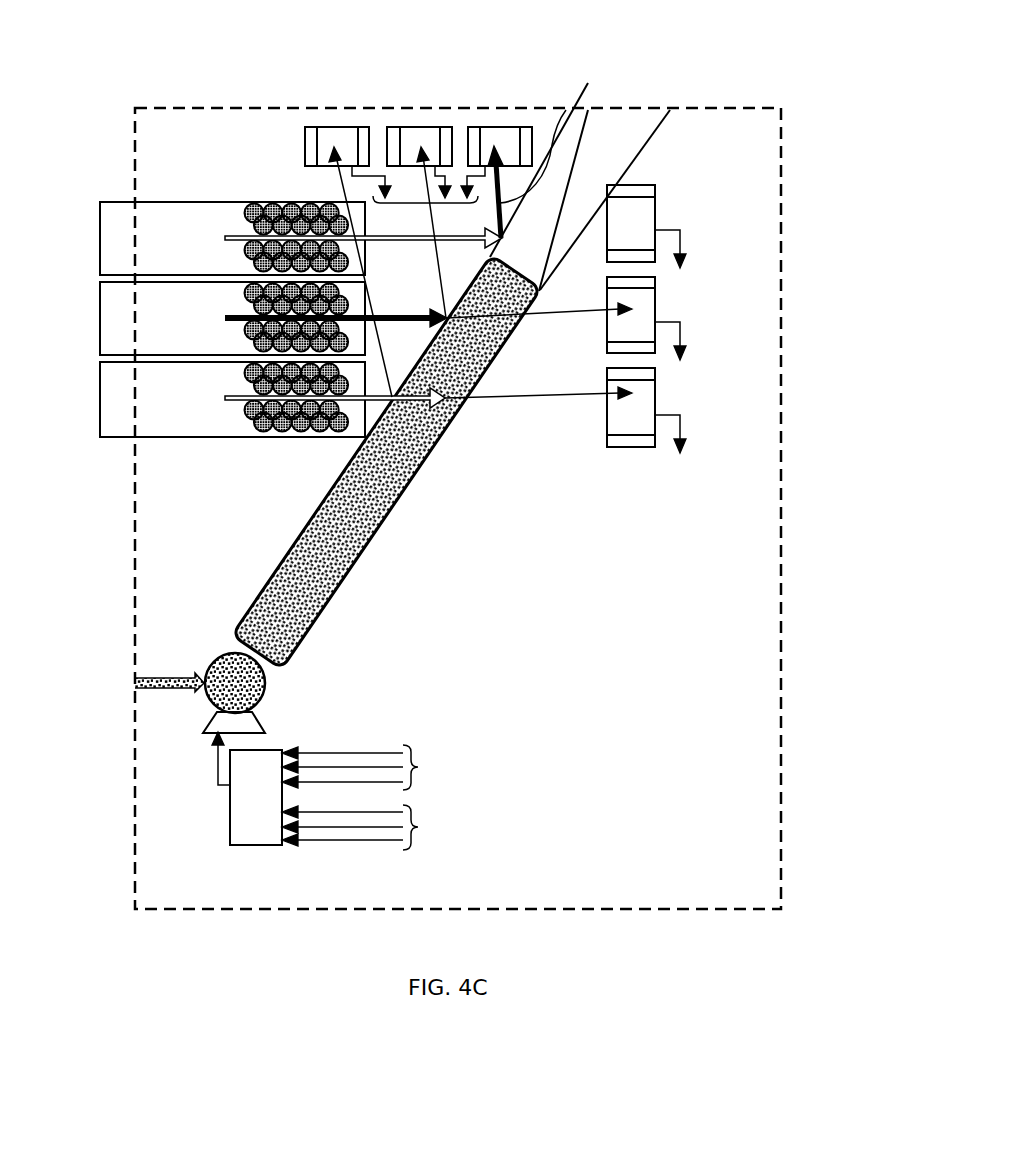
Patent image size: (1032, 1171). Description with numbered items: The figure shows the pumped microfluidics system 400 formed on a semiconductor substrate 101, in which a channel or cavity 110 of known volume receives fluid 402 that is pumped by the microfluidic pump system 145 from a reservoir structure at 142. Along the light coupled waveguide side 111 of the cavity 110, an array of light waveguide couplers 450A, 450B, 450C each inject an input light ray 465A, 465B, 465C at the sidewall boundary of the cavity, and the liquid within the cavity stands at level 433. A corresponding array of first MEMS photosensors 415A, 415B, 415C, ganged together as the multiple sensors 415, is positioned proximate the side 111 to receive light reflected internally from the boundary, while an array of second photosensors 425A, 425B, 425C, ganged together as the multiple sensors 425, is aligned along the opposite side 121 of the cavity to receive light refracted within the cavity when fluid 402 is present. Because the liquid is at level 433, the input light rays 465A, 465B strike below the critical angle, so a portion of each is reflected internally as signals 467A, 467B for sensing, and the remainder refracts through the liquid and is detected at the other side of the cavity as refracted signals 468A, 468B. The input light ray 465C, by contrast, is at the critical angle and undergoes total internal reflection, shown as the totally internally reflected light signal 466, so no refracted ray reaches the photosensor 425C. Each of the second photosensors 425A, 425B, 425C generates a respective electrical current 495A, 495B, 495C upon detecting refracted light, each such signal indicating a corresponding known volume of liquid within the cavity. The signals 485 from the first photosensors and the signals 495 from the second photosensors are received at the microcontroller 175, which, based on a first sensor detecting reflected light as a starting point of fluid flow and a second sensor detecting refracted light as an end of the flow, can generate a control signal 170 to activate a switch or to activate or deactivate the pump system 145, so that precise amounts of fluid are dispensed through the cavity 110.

The microfluidics system 400 is at (178, 108).
The semiconductor substrate 101 is at (693, 862).
The multiple photosensors 415 is at (297, 60).
The first MEMS light sensor 415A is at (338, 127).
The first MEMS light sensor 415B is at (422, 127).
The first MEMS light sensor 415C is at (503, 127).
The generated signals 485 is at (427, 207).
The totally internally reflected light signal 466 is at (580, 175).
The opposite side of the cavity 121 is at (373, 462).
The fluid 402 is at (373, 462).
The light coupled waveguide side 111 is at (277, 570).
The cavity 110 is at (237, 627).
The reservoir structure 142 is at (170, 690).
The microfluidic pump system 145 is at (260, 724).
The control signal 170 is at (218, 772).
The microcontroller 175 is at (255, 846).
The generated signals 495 is at (374, 827).
The light waveguide coupler 450A is at (100, 396).
The light waveguide coupler 450B is at (100, 316).
The light waveguide coupler 450C is at (100, 236).
The input light ray 465A is at (225, 396).
The input light ray 465B is at (225, 316).
The input light ray 465C is at (225, 236).
The internally reflected signal 467A is at (385, 362).
The internally reflected signal 467B is at (440, 285).
The liquid level 433 is at (527, 288).
The refracted signal 468A is at (557, 397).
The refracted signal 468B is at (557, 313).
The multiple sensors 425 is at (863, 163).
The second photosensor 425A is at (657, 394).
The second photosensor 425B is at (657, 300).
The second photosensor 425C is at (657, 208).
The electrical current signal 495A is at (684, 424).
The electrical current signal 495B is at (684, 330).
The electrical current signal 495C is at (684, 238).